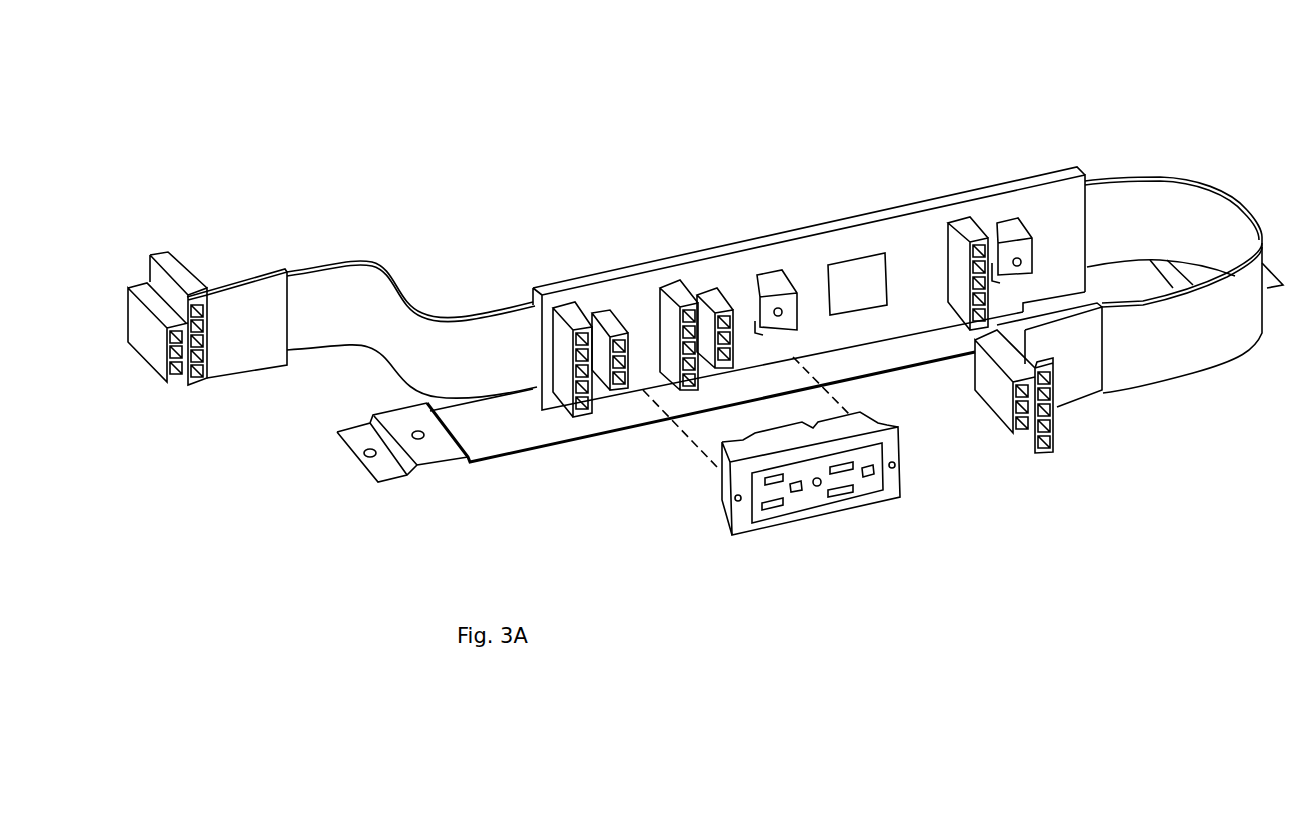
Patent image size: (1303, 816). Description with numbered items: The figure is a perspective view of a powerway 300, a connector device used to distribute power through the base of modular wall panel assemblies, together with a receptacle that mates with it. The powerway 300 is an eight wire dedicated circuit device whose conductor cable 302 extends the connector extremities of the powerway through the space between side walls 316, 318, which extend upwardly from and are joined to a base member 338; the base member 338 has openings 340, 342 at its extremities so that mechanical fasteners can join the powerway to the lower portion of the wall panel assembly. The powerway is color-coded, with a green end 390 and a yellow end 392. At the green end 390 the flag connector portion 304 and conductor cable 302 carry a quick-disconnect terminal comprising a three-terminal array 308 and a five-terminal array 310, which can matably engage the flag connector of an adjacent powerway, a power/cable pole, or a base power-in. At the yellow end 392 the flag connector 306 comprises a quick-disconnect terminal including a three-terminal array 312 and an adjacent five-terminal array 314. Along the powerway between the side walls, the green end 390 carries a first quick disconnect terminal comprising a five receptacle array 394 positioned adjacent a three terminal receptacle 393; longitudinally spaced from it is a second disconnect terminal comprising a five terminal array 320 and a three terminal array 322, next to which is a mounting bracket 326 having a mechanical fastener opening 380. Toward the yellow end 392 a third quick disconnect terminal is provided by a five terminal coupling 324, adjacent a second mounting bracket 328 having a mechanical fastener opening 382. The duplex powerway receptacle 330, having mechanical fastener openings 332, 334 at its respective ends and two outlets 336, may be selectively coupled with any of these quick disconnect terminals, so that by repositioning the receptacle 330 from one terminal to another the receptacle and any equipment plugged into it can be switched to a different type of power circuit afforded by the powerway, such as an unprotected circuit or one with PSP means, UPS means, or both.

The powerway 300 is at (1127, 122).
The conductor cable 302 is at (492, 342).
The flag connector portion 304 is at (245, 278).
The flag connector 306 is at (1090, 392).
The three-terminal array 308 is at (183, 385).
The five-terminal array 310 is at (208, 375).
The three-terminal array 312 is at (1017, 432).
The five-terminal array 314 is at (1050, 440).
The side wall 316 is at (735, 270).
The side wall 318 is at (887, 210).
The five terminal array 320 is at (620, 288).
The three terminal array 322 is at (678, 295).
The five terminal coupling 324 is at (953, 255).
The mounting bracket 326 is at (773, 305).
The second mounting bracket 328 is at (1008, 248).
The duplex powerway receptacle 330 is at (845, 508).
The mechanical fastener opening 332 is at (740, 498).
The mechanical fastener opening 334 is at (895, 465).
The outlets 336 is at (780, 507).
The base member 338 is at (483, 450).
The opening 340 is at (358, 457).
The opening 342 is at (425, 437).
The mechanical fastener opening 380 is at (795, 293).
The mechanical fastener opening 382 is at (1018, 258).
The green end 390 is at (713, 377).
The yellow end 392 is at (932, 325).
The three terminal receptacle 393 is at (622, 388).
The five receptacle array 394 is at (582, 410).